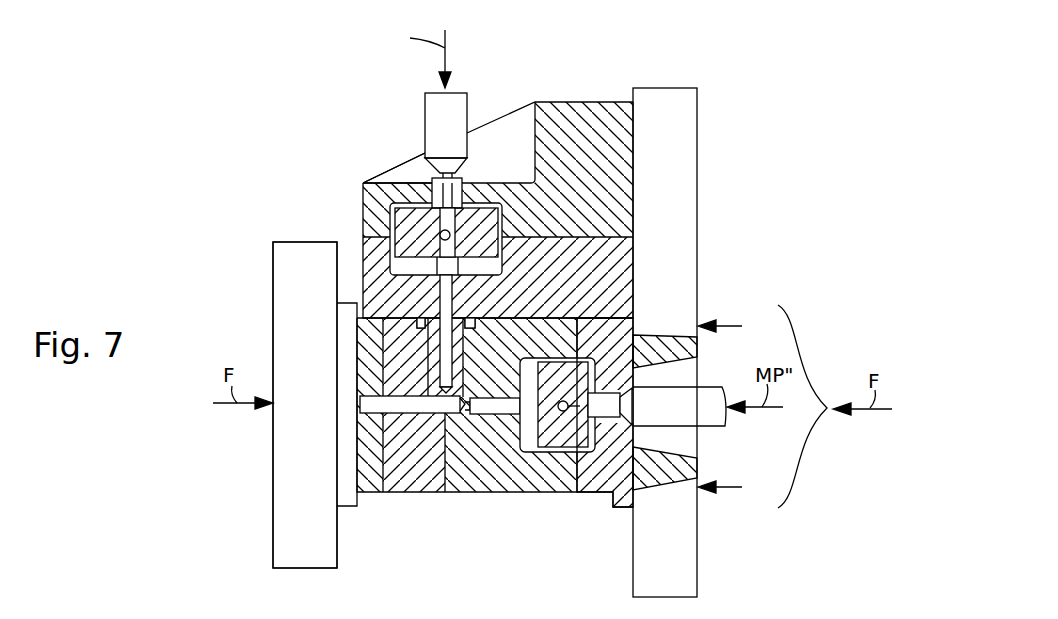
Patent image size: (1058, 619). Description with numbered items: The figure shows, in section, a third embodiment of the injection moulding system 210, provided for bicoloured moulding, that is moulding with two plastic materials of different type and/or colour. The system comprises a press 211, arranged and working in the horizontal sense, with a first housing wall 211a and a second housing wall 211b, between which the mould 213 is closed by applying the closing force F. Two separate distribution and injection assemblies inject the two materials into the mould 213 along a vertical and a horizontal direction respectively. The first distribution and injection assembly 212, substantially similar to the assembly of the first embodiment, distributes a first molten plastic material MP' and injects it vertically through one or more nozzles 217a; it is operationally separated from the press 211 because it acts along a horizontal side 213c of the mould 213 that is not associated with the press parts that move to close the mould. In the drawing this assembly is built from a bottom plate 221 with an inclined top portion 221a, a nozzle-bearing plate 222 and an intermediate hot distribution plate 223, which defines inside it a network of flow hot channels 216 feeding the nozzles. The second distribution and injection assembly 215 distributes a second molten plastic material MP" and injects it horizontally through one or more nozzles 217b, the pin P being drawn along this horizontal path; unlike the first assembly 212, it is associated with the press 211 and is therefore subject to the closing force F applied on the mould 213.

The injection moulding system 210 is at (199, 139).
The press 211 is at (197, 554).
The first housing wall 211a is at (278, 497).
The second housing wall 211b is at (688, 113).
The first distribution and injection assembly 212 is at (336, 163).
The mould 213 is at (428, 536).
The horizontal side of the mould 213c is at (398, 316).
The second distribution and injection assembly 215 is at (581, 524).
The flow hot channels 216 is at (450, 233).
The nozzles 217a is at (442, 362).
The nozzles 217b is at (498, 408).
The bottom plate 221 is at (577, 103).
The inclined top portion 221a is at (393, 172).
The nozzle-bearing plate 222 is at (365, 255).
The intermediate distribution plate 223 is at (397, 222).
The pin P is at (455, 413).